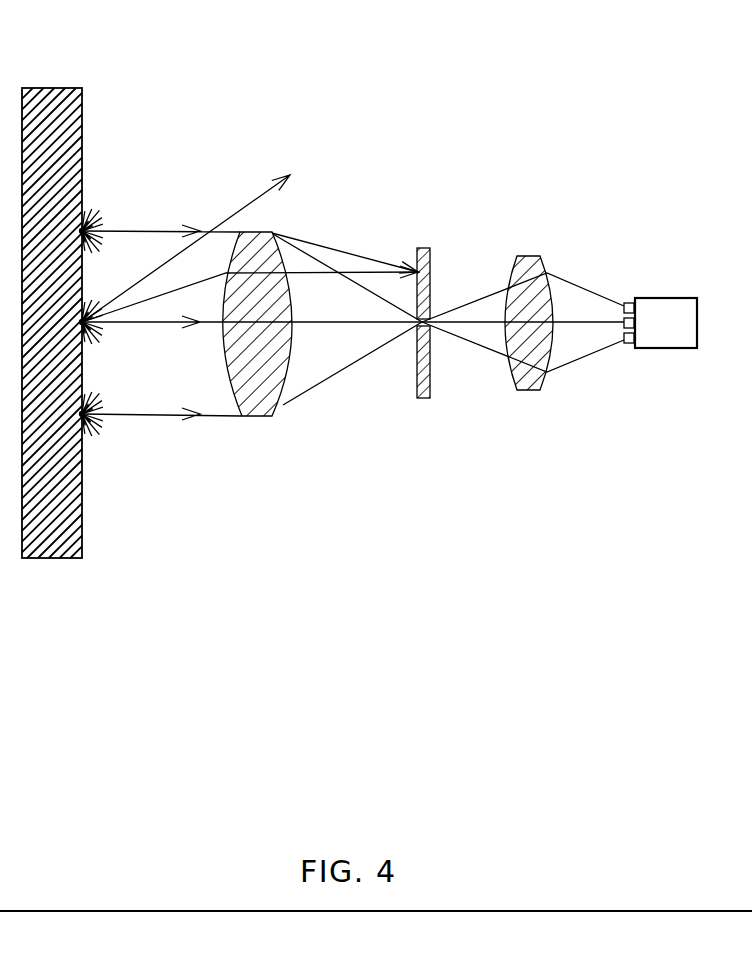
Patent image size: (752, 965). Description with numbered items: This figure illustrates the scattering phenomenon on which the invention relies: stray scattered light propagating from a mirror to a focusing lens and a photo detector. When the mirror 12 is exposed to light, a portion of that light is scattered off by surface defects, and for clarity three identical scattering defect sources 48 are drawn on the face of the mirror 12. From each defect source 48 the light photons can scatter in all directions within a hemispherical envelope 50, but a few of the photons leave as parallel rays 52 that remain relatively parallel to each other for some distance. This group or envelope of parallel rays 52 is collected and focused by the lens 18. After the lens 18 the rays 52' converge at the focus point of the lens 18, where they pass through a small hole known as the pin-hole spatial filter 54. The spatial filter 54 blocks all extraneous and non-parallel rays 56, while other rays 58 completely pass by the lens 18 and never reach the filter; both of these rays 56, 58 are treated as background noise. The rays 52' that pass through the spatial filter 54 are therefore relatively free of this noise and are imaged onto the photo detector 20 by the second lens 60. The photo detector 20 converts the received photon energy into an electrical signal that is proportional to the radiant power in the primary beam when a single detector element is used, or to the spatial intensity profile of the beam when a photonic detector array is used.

The mirror 12 is at (52, 558).
The scattering defect sources 48 is at (97, 222).
The hemispherical envelope 50 is at (99, 220).
The parallel rays 52 is at (162, 305).
The converging rays 52' is at (345, 185).
The pin-hole spatial filter 54 is at (423, 398).
The extraneous non-parallel rays 56 is at (362, 272).
The rays passing by the lens 58 is at (236, 212).
The lens 18 is at (257, 417).
The second lens 60 is at (530, 390).
The photo detector 20 is at (627, 344).